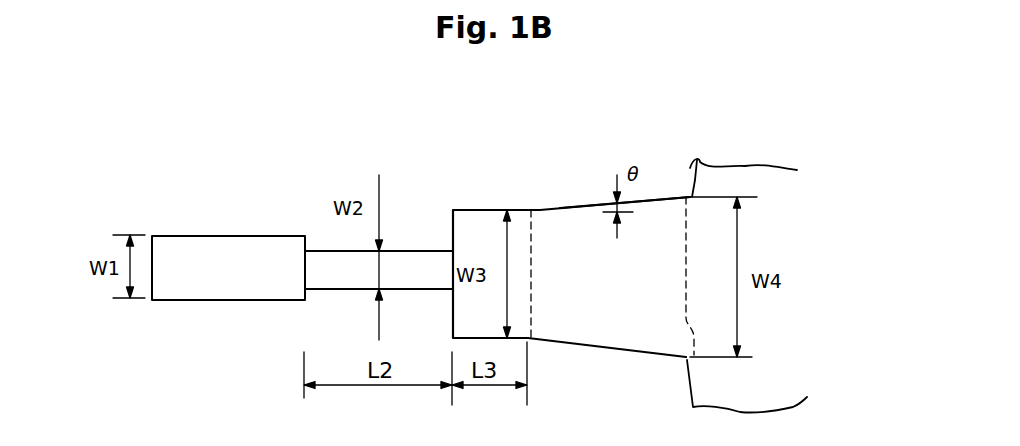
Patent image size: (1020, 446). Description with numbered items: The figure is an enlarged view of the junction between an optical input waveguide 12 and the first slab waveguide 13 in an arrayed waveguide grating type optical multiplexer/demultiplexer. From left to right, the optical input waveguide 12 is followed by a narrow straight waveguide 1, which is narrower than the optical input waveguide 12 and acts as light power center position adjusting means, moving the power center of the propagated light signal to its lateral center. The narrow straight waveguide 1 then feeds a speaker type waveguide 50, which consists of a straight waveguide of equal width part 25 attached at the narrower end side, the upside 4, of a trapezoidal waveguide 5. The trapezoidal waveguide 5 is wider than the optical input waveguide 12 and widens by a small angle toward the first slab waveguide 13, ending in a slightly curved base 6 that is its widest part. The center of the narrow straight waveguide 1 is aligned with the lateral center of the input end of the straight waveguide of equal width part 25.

The narrow straight waveguide 1 is at (423, 270).
The upside 4 is at (532, 258).
The trapezoidal waveguide 5 is at (657, 225).
The base 6 is at (686, 363).
The optical input waveguide 12 is at (231, 255).
The first slab waveguide 13 is at (692, 197).
The straight waveguide of equal width part 25 is at (487, 225).
The speaker type waveguide 50 is at (598, 332).